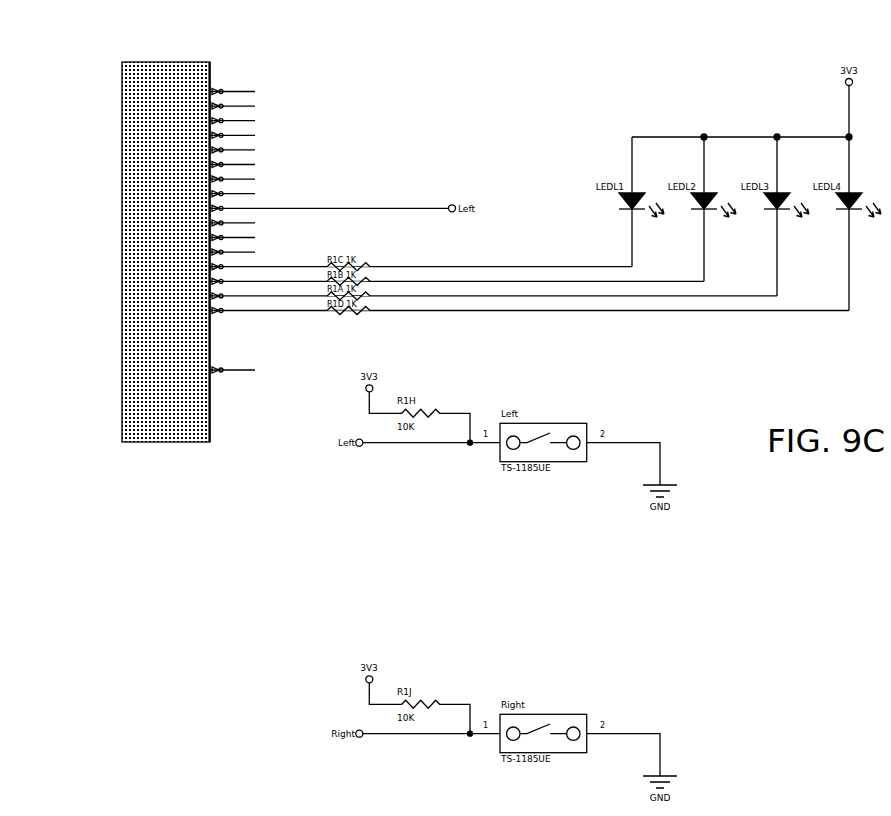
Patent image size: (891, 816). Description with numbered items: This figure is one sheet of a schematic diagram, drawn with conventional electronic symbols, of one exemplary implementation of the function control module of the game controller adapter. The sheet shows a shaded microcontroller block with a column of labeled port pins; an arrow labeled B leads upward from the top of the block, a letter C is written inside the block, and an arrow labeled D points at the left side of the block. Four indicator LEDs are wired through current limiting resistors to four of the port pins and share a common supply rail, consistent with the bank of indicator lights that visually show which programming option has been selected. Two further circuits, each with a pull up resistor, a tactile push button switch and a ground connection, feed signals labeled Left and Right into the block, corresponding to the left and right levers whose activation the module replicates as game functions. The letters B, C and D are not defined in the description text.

The connection to board/controller (arrow) B is at (152, 58).
The microcontroller block C is at (485, 252).
The controller module (arrow) D is at (122, 283).